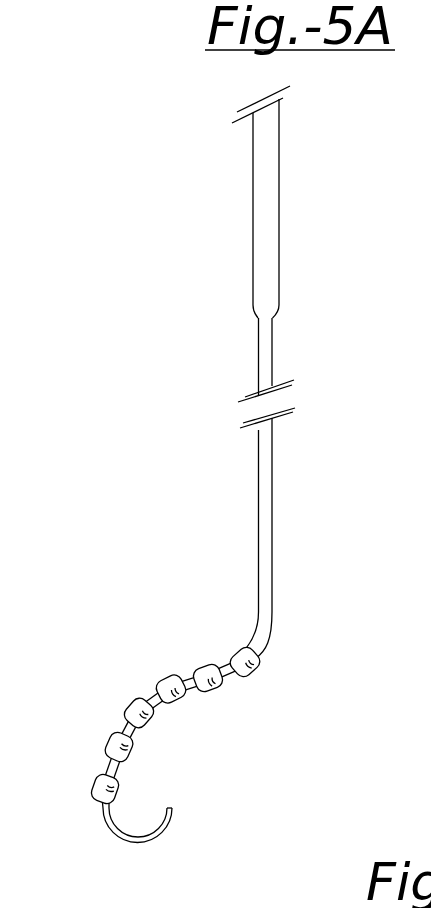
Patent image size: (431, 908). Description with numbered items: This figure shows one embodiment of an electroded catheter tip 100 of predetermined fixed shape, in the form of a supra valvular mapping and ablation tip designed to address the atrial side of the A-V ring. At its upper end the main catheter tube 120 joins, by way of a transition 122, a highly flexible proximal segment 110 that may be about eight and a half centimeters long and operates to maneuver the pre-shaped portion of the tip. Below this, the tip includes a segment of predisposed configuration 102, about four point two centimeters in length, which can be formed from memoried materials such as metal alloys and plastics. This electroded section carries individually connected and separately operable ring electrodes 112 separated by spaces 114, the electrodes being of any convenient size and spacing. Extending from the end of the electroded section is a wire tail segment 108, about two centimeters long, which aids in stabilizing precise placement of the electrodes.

The catheter tip 100 is at (287, 192).
The main catheter tube 120 is at (251, 248).
The transition 122 is at (258, 322).
The flexible proximal segment 110 is at (257, 538).
The predisposed configuration segment 102 is at (147, 680).
The spaces 114 is at (156, 693).
The ring electrodes 112 is at (92, 786).
The wire tail segment 108 is at (117, 839).